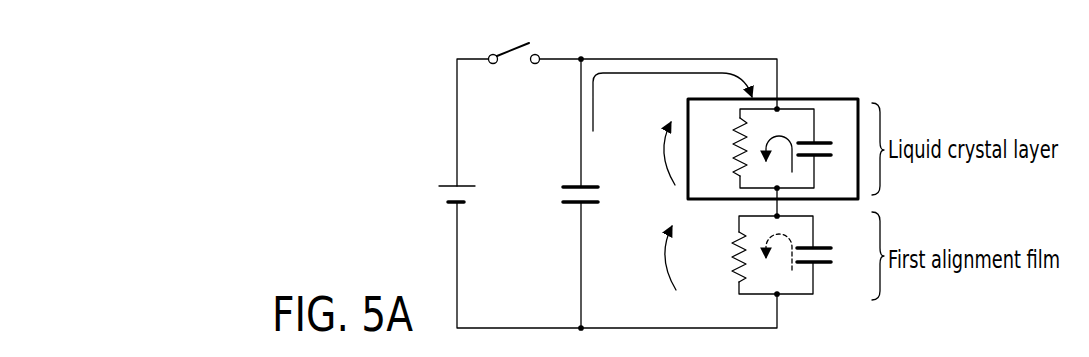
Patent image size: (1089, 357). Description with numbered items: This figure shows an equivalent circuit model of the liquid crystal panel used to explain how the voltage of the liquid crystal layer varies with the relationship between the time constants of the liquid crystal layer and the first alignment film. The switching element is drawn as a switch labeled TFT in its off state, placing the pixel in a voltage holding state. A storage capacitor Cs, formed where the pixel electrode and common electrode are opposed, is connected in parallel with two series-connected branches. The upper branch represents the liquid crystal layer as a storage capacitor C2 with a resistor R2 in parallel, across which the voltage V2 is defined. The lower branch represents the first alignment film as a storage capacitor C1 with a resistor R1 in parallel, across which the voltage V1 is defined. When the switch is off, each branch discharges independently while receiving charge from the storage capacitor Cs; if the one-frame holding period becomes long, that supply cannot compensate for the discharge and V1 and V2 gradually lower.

The thin film transistor switch (TFT=OFF) TFT is at (561, 44).
The storage capacitor Cs is at (568, 193).
The resistor R2 is at (723, 147).
The storage capacitor of the liquid crystal layer C2 is at (823, 167).
The voltage of the liquid crystal layer V2 is at (653, 153).
The resistor R1 is at (722, 257).
The storage capacitor of the first alignment film C1 is at (822, 273).
The voltage of the first alignment film V1 is at (653, 258).